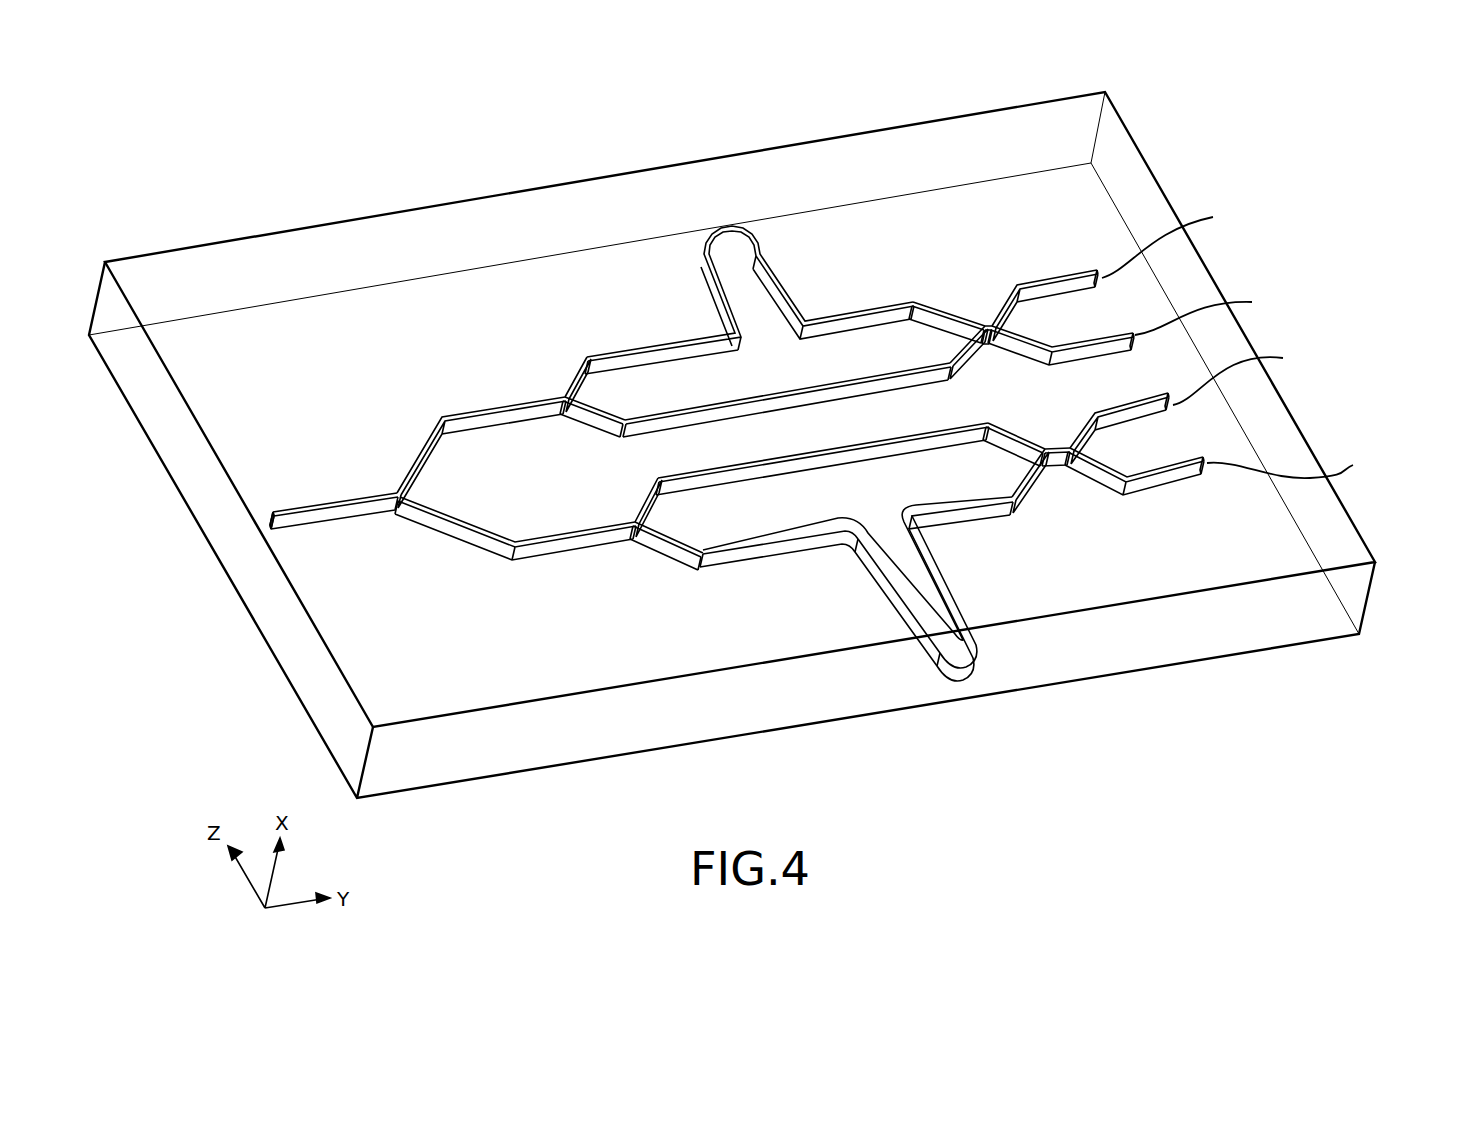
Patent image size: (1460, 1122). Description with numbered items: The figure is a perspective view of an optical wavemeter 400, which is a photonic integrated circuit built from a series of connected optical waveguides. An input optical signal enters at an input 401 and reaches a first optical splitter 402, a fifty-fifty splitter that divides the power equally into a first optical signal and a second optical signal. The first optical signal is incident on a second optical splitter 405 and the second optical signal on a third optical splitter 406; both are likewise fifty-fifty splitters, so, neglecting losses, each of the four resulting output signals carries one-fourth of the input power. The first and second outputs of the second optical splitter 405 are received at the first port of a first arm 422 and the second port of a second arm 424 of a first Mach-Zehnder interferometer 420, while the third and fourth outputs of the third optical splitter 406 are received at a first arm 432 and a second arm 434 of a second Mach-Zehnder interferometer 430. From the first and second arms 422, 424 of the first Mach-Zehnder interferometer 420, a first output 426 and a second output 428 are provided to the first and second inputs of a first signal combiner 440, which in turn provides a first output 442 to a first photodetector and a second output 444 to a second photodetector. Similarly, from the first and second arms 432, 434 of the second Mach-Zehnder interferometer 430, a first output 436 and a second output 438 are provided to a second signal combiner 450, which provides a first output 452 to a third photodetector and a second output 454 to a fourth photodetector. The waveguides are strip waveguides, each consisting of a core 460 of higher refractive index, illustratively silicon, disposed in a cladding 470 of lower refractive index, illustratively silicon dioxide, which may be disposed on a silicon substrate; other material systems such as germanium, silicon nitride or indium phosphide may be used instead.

The optical wavemeter 400 is at (690, 110).
The input 401 is at (271, 522).
The first optical splitter 402 is at (417, 453).
The second optical splitter 405 is at (577, 385).
The third optical splitter 406 is at (625, 540).
The first Mach-Zehnder interferometer 420 is at (793, 370).
The first arm 422 is at (627, 352).
The second arm 424 is at (638, 438).
The first output 426 is at (930, 308).
The second output 428 is at (952, 368).
The second Mach-Zehnder interferometer 430 is at (823, 513).
The first arm 432 is at (690, 472).
The second arm 434 is at (957, 592).
The first output 436 is at (1015, 430).
The second output 438 is at (1032, 493).
The first signal combiner 440 is at (983, 320).
The first output 442 is at (1017, 318).
The second output 444 is at (1052, 337).
The second signal combiner 450 is at (1057, 443).
The first output 452 is at (1095, 443).
The second output 454 is at (1113, 458).
The core 460 is at (342, 513).
The cladding 470 is at (1183, 630).